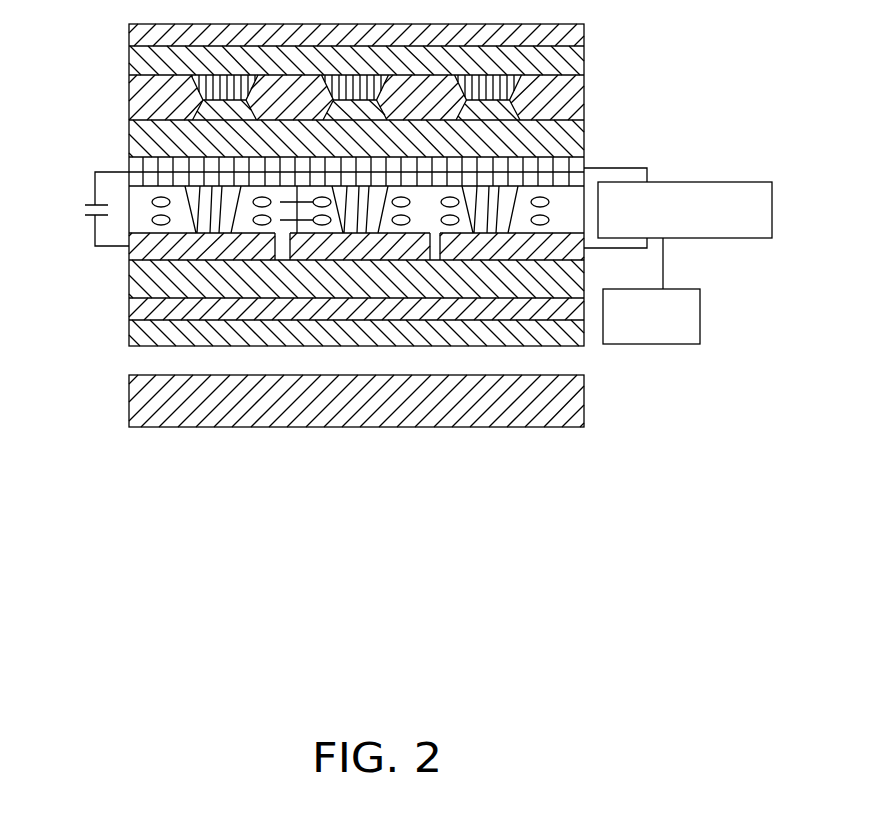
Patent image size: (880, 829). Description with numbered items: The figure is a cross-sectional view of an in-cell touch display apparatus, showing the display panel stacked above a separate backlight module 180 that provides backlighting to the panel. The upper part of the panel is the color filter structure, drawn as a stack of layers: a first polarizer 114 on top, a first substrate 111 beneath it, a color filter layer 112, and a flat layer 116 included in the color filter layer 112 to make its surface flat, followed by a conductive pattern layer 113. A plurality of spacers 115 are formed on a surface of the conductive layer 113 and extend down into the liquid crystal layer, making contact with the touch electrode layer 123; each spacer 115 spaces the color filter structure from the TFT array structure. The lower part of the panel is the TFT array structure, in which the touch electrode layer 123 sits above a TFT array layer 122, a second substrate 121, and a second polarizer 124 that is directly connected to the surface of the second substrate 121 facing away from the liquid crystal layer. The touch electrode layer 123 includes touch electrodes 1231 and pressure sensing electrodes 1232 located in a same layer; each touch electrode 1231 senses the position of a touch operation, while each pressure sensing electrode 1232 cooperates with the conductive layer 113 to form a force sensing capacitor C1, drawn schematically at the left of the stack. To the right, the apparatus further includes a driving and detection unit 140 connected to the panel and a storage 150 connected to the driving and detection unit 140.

The first polarizer 114 is at (573, 40).
The first substrate 111 is at (571, 66).
The color filter layer 112 is at (563, 99).
The spacers 115 is at (356, 200).
The flat layer 116 is at (567, 140).
The conductive pattern layer 113 is at (140, 168).
The touch electrodes 1231 is at (200, 250).
The pressure sensing electrodes 1232 is at (345, 248).
The touch electrode layer 123 is at (354, 245).
The TFT array layer 122 is at (143, 270).
The second substrate 121 is at (143, 305).
The second polarizer 124 is at (143, 333).
The force sensing capacitor C1 is at (90, 209).
The driving and detection unit 140 is at (676, 182).
The storage 150 is at (680, 289).
The backlight module 180 is at (586, 405).